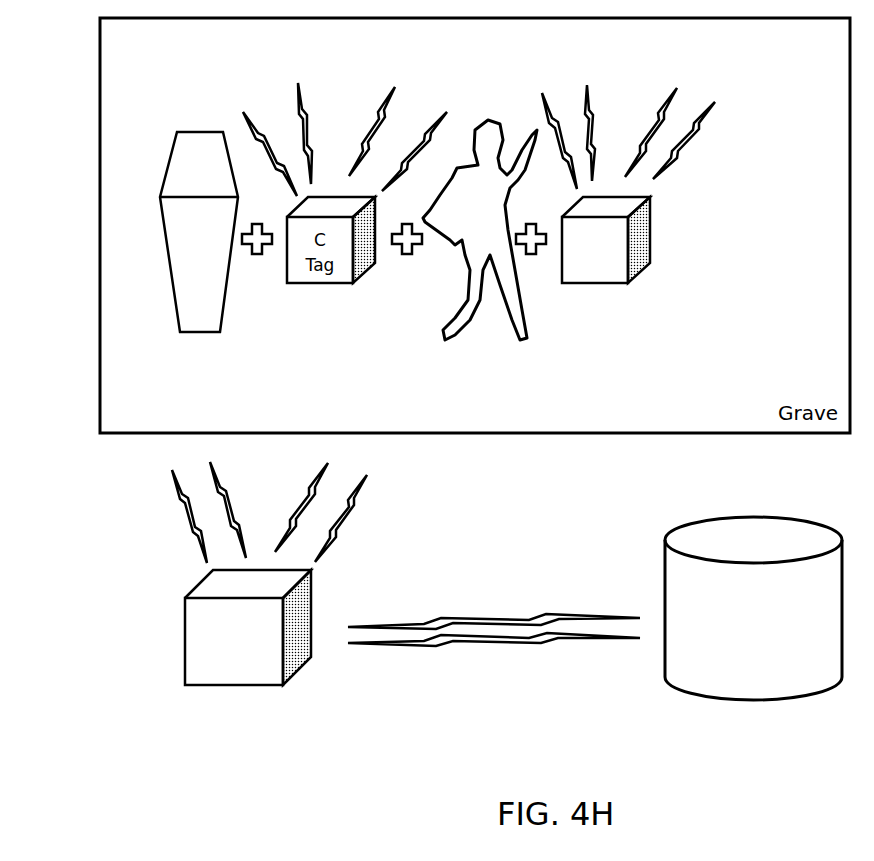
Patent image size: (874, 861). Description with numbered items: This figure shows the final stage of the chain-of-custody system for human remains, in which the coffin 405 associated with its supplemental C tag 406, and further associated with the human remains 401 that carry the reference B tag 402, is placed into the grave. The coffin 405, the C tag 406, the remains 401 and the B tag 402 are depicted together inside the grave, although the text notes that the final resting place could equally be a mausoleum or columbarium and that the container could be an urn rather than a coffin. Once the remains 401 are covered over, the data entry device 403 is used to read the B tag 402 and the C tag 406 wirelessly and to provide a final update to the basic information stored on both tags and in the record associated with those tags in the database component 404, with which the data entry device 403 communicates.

The human remains 401 is at (503, 341).
The longwave, magnetic signal tag (B tag) 402 is at (618, 98).
The data entry device 403 is at (178, 640).
The database component 404 is at (650, 557).
The coffin 405 is at (204, 343).
The longwave, magnetic signal tag (C tag) 406 is at (342, 110).